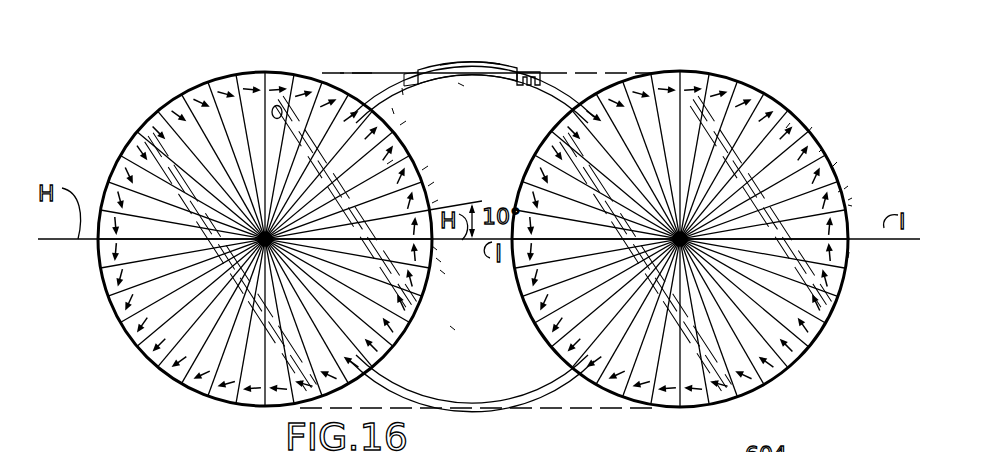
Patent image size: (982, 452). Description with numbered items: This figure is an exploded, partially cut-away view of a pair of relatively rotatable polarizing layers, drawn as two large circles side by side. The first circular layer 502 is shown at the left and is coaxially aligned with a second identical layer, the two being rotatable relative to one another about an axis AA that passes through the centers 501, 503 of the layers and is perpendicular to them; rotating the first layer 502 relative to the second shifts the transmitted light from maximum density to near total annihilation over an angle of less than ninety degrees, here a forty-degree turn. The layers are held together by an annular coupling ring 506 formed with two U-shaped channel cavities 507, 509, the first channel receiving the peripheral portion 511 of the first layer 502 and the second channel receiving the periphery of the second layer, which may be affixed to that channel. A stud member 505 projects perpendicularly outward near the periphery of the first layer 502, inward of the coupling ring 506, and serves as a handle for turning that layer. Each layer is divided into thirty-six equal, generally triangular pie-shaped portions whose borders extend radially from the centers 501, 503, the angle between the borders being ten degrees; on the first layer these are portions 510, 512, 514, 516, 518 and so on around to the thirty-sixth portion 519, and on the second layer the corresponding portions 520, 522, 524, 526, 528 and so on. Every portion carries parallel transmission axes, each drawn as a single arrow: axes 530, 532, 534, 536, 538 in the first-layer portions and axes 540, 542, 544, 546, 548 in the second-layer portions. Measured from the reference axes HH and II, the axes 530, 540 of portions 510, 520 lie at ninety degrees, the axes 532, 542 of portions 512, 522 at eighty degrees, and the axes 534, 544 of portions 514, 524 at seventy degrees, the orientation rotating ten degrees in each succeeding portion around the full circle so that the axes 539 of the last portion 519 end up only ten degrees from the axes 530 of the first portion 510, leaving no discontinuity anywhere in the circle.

The center of first layer 501 is at (120, 323).
The first circular layer 502 is at (193, 77).
The center of second layer 503 is at (720, 0).
The stud member 505 is at (272, 110).
The annular coupling ring 506 is at (464, 64).
The U-shaped channel cavity 507 is at (526, 68).
The U-shaped channel cavity 509 is at (563, 75).
The pie-shaped portion 510 is at (441, 262).
The peripheral portion 511 is at (150, 120).
The pie-shaped portion 512 is at (434, 182).
The pie-shaped portion 514 is at (428, 166).
The pie-shaped portion 516 is at (402, 88).
The pie-shaped portion 518 is at (392, 108).
The pie-shaped portion 519 is at (445, 274).
The pie-shaped portion 520 is at (849, 252).
The pie-shaped portion 522 is at (848, 200).
The pie-shaped portion 524 is at (844, 189).
The pie-shaped portion 526 is at (833, 166).
The pie-shaped portion 528 is at (808, 132).
The transmission axes 530 is at (437, 250).
The transmission axes 532 is at (438, 200).
The transmission axes 534 is at (393, 160).
The transmission axes 536 is at (406, 121).
The transmission axes 538 is at (348, 73).
The transmission axes 539 is at (455, 330).
The transmission axes 540 is at (849, 240).
The transmission axes 542 is at (848, 205).
The transmission axes 544 is at (838, 192).
The transmission axes 546 is at (819, 152).
The transmission axes 548 is at (786, 128).
The axis AA is at (178, 384).